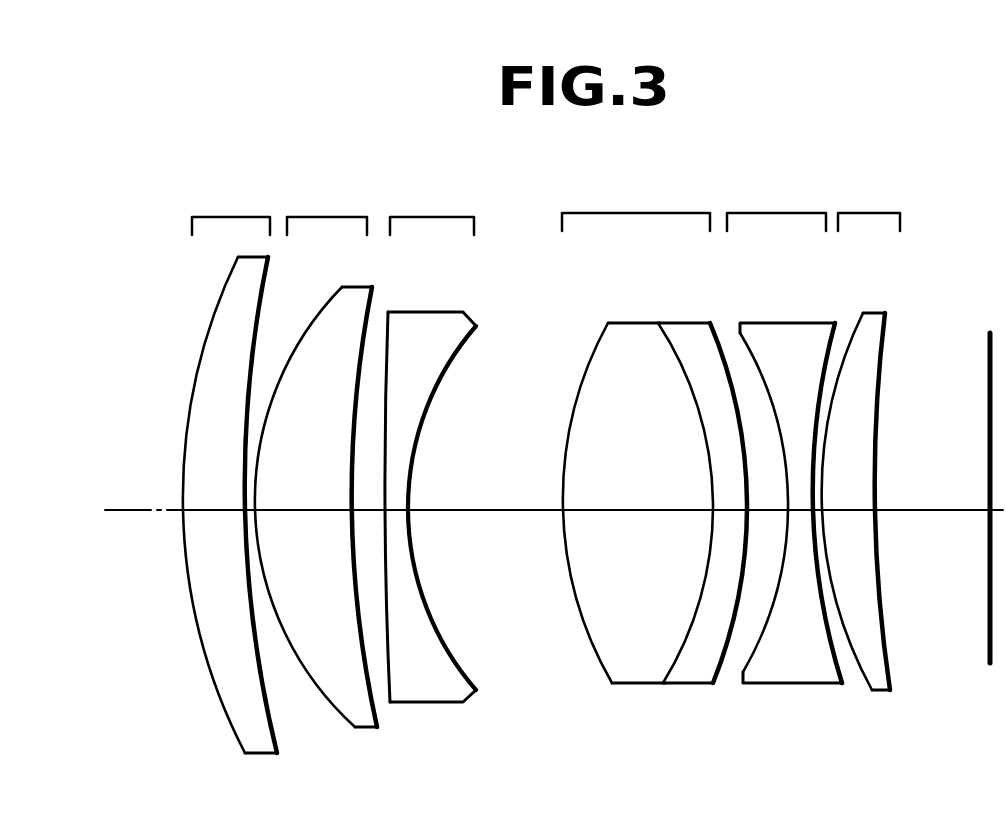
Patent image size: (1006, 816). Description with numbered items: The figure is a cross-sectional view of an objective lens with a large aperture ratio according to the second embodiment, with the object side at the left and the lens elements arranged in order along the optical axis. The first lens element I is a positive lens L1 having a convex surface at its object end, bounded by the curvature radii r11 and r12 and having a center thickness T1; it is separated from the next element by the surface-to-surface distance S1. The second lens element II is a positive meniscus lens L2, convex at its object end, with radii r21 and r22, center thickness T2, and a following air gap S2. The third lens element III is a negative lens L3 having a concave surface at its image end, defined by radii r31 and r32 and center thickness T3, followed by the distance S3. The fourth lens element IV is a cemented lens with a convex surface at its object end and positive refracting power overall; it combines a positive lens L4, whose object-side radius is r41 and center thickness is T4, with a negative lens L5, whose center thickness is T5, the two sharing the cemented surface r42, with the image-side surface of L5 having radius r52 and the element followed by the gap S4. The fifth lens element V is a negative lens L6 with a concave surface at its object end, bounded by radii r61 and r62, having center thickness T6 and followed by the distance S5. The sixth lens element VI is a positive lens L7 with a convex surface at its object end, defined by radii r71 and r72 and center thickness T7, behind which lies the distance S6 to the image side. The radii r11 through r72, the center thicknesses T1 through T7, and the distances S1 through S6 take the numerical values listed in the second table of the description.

The curvature radius of object-end surface of lens L1 r11 is at (228, 288).
The curvature radius of image-end surface of lens L1 r12 is at (266, 279).
The curvature radius of object-end surface of lens L2 r21 is at (336, 310).
The curvature radius of image-end surface of lens L2 r22 is at (372, 318).
The curvature radius of object-end surface of lens L3 r31 is at (387, 352).
The curvature radius of image-end surface of lens L3 r32 is at (440, 388).
The curvature radius of object-end surface of lens L4 r41 is at (590, 368).
The curvature radius of cemented surface between lenses L4 and L5 r42 is at (663, 342).
The curvature radius of image-end surface of lens L5 r52 is at (716, 345).
The curvature radius of object-end surface of lens L6 r61 is at (748, 358).
The curvature radius of image-end surface of lens L6 r62 is at (833, 347).
The curvature radius of object-end surface of lens L7 r71 is at (850, 356).
The curvature radius of image-end surface of lens L7 r72 is at (884, 362).
The positive lens L1 is at (241, 493).
The positive meniscus lens L2 is at (362, 485).
The negative lens L3 is at (456, 487).
The positive lens L4 is at (624, 462).
The negative lens L5 is at (720, 462).
The negative lens L6 is at (838, 463).
The positive lens L7 is at (902, 481).
The center thickness of lens L1 T1 is at (214, 494).
The center thickness of lens L2 T2 is at (303, 494).
The center thickness of lens L3 T3 is at (396, 510).
The center thickness of lens L4 T4 is at (638, 492).
The center thickness of lens L5 T5 is at (730, 509).
The center thickness of lens L6 T6 is at (808, 516).
The center thickness of lens L7 T7 is at (848, 489).
The surface-to-surface distance between L1 and L2 S1 is at (248, 514).
The surface-to-surface distance between L2 and L3 S2 is at (367, 513).
The surface-to-surface distance between L3 and L4 S3 is at (485, 529).
The surface-to-surface distance between L5 and L6 S4 is at (777, 509).
The surface-to-surface distance between L6 and L7 S5 is at (821, 512).
The surface-to-surface distance following L7 S6 is at (932, 489).
The first lens element I is at (231, 209).
The second lens element II is at (327, 209).
The third lens element III is at (432, 209).
The fourth lens element IV is at (636, 205).
The fifth lens element V is at (776, 205).
The sixth lens element VI is at (869, 205).